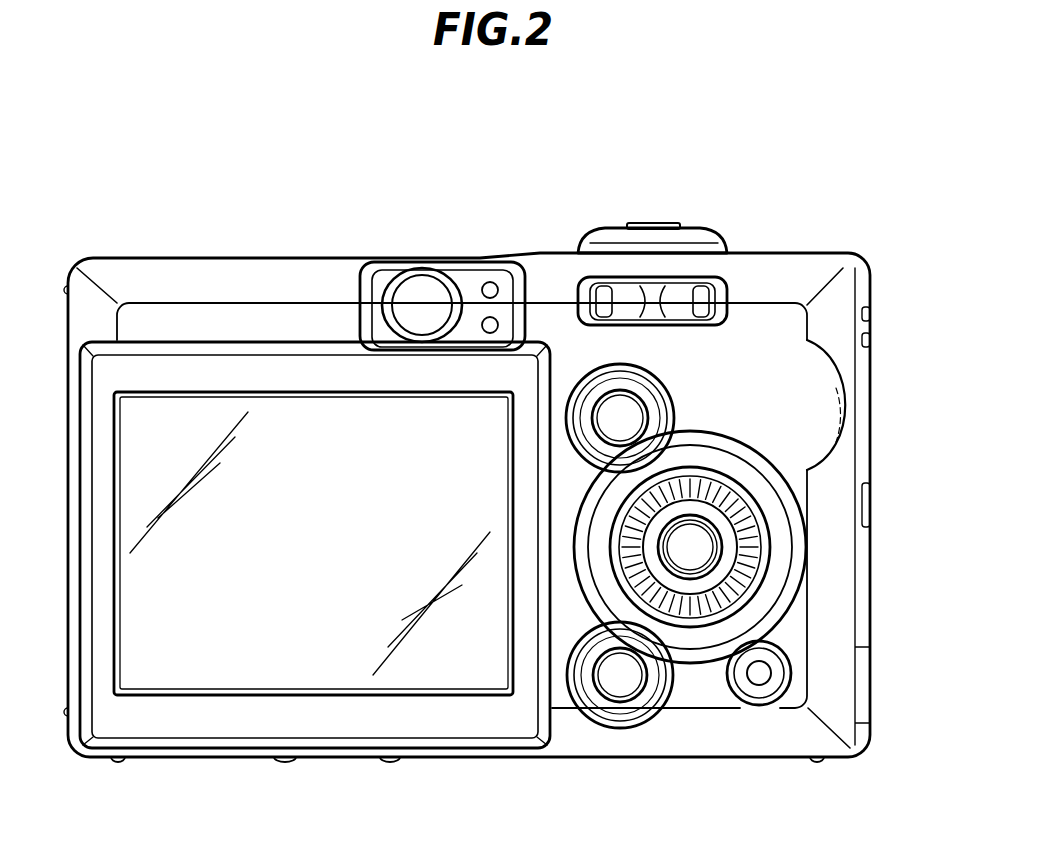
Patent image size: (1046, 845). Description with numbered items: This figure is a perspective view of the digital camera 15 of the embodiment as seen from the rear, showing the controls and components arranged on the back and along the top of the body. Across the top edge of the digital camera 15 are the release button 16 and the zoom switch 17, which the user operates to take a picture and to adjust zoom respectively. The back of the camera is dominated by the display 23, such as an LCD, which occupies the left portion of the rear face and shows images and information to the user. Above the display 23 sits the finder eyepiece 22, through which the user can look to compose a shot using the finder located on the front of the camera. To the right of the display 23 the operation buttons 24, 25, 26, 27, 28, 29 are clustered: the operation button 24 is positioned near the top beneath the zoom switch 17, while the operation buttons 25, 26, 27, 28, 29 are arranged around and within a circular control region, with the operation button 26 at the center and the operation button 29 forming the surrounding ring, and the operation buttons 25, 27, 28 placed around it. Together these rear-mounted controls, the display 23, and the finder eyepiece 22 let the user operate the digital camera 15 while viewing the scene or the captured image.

The digital camera 15 is at (206, 268).
The release button 16 is at (650, 225).
The zoom switch 17 is at (705, 250).
The finder eyepiece 22 is at (420, 292).
The display 23 is at (407, 675).
The operation button 24 is at (688, 293).
The operation button 25 is at (633, 410).
The operation button 26 is at (697, 548).
The operation button 27 is at (620, 678).
The operation button 28 is at (759, 675).
The operation button 29 is at (763, 580).